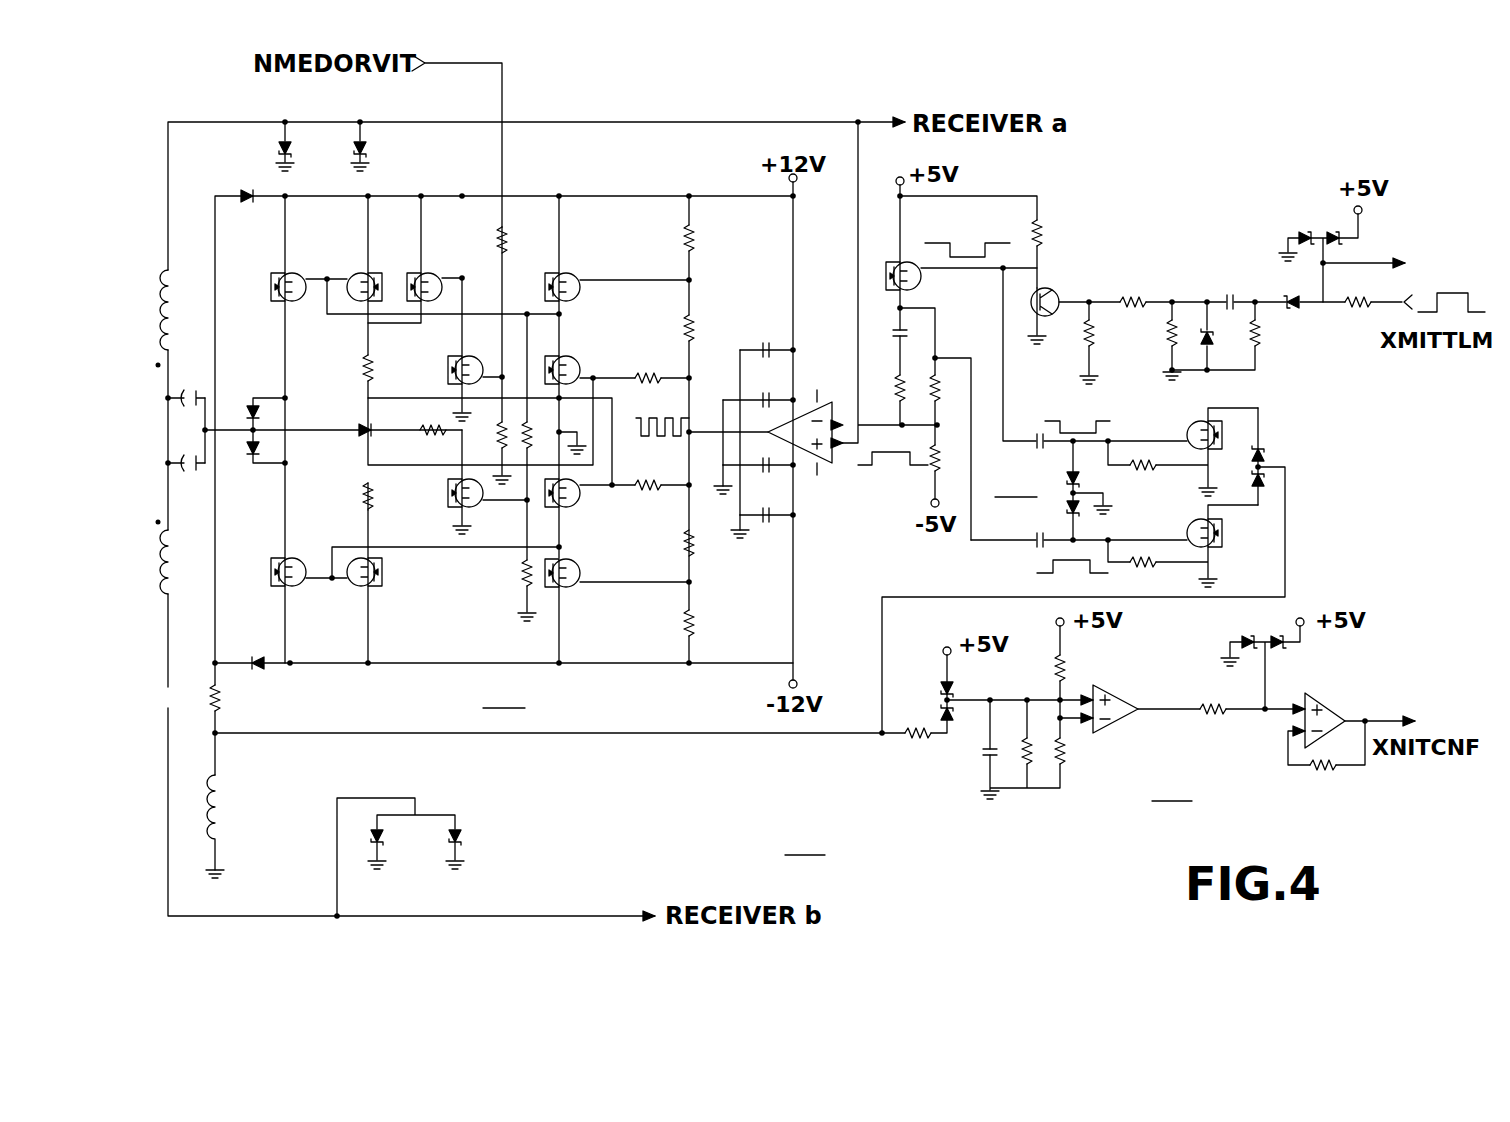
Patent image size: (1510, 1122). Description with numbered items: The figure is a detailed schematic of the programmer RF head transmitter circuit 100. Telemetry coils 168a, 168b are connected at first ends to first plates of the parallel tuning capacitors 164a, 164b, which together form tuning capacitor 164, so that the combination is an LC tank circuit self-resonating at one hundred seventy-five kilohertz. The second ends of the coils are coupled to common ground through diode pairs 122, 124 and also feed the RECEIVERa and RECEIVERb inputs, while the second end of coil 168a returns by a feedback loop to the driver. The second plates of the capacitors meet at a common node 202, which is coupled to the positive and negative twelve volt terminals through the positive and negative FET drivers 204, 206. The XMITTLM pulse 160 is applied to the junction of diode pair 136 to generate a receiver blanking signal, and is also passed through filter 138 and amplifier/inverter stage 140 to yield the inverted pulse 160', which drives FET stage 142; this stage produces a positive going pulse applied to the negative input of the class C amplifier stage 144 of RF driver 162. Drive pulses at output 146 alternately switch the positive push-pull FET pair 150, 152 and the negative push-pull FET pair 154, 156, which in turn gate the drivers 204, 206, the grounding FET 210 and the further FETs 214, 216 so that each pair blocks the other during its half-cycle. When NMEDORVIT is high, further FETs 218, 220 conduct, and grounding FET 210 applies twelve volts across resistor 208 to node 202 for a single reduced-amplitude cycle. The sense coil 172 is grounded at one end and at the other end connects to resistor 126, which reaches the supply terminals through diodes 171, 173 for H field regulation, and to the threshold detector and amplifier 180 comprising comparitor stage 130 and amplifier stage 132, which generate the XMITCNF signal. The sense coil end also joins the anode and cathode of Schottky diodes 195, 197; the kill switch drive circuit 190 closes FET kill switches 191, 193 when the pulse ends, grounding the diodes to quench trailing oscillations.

The transceiver circuit 100 is at (808, 842).
The diode pair 122 is at (285, 153).
The diode pair 124 is at (384, 842).
The resistor 126 is at (222, 705).
The comparitor stage 130 is at (1112, 692).
The amplifier stage 132 is at (1325, 705).
The diode pair 136 is at (1365, 256).
The filter 138 is at (1210, 285).
The amplifier/inverter stage 140 is at (1060, 280).
The FET stage 142 is at (928, 294).
The class C amplifier stage 144 is at (842, 472).
The output 146 is at (700, 432).
The positive push-pull FET 150 is at (574, 275).
The positive push-pull FET 152 is at (582, 360).
The negative push-pull FET 154 is at (582, 505).
The negative push-pull FET 156 is at (586, 570).
The XMITTLM pulse 160 is at (1451, 280).
The filtered and inverted XMITTLM pulse 160' is at (971, 232).
The RF driver 162 is at (506, 695).
The tuning capacitor 164 is at (190, 430).
The tuning capacitor 164a is at (182, 382).
The tuning capacitor 164b is at (183, 477).
The telemetry coil 168a is at (173, 290).
The telemetry coil 168b is at (177, 565).
The diode 171 is at (246, 204).
The sense coil 172 is at (225, 818).
The diode 173 is at (263, 675).
The threshold detector and amplifier 180 is at (1175, 788).
The kill switch drive circuit 190 is at (1018, 484).
The FET kill switch 191 is at (1190, 425).
The FET kill switch 193 is at (1190, 528).
The Schottky diode 195 is at (1272, 452).
The Schottky diode 197 is at (1270, 490).
The common node 202 is at (288, 428).
The positive FET driver 204 is at (292, 272).
The negative FET driver 206 is at (292, 555).
The resistor 208 is at (432, 432).
The grounding FET 210 is at (455, 505).
The further FET 214 is at (373, 271).
The further FET 216 is at (388, 586).
The further FET 218 is at (455, 366).
The further FET 220 is at (457, 277).